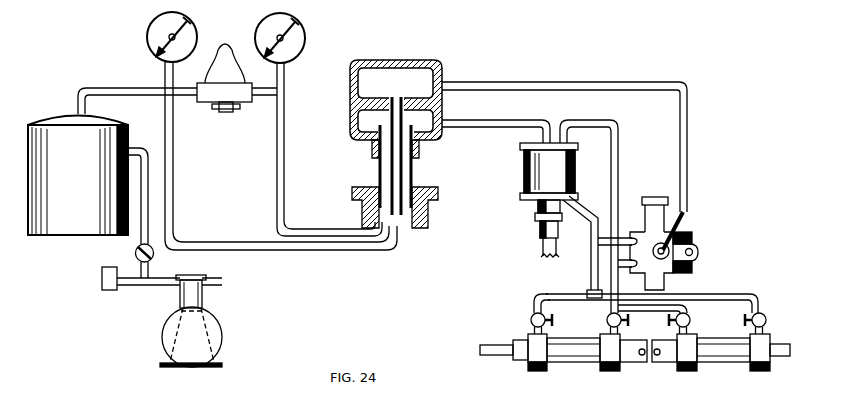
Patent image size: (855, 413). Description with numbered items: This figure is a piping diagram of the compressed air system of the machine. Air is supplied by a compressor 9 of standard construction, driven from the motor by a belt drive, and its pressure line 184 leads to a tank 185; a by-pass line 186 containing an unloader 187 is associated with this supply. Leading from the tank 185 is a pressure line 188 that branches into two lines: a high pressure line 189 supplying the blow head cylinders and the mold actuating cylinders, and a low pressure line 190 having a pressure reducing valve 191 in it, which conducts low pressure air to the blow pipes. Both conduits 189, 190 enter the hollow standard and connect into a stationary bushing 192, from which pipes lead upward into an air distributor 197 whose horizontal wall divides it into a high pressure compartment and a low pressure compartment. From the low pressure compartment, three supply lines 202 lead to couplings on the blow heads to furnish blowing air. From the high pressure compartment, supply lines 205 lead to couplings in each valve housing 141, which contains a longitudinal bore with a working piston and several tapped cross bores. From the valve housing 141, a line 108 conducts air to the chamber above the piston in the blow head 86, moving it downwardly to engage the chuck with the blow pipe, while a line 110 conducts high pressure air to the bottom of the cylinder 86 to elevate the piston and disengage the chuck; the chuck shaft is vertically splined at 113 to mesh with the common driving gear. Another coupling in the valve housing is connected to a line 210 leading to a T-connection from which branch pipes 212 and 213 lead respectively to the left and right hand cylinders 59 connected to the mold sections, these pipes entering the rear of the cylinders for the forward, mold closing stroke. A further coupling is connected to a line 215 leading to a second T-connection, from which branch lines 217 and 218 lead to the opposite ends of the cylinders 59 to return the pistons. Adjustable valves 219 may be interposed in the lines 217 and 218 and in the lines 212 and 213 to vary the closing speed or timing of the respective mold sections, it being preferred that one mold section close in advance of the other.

The compressor 9 is at (206, 300).
The cylinders 59 is at (558, 367).
The blow head 86 is at (522, 157).
The high pressure supply line 108 is at (620, 146).
The high pressure line 110 is at (590, 213).
The spline 113 is at (536, 213).
The valve housing 141 is at (644, 215).
The pressure line 184 is at (172, 285).
The tank 185 is at (44, 234).
The by-pass line 186 is at (122, 291).
The unloader 187 is at (102, 280).
The pressure line 188 is at (134, 88).
The high pressure line 189 is at (173, 183).
The low pressure line 190 is at (265, 98).
The pressure reducing valve 191 is at (234, 64).
The stationary bushing 192 is at (428, 214).
The air distributor 197 is at (404, 60).
The supply lines 202 is at (474, 119).
The supply lines 205 is at (524, 85).
The line 210 is at (587, 292).
The branch pipe 212 is at (606, 322).
The branch pipe 213 is at (653, 305).
The line 215 is at (589, 261).
The branch line 217 is at (534, 296).
The branch line 218 is at (725, 295).
The adjustable valves 219 is at (530, 320).